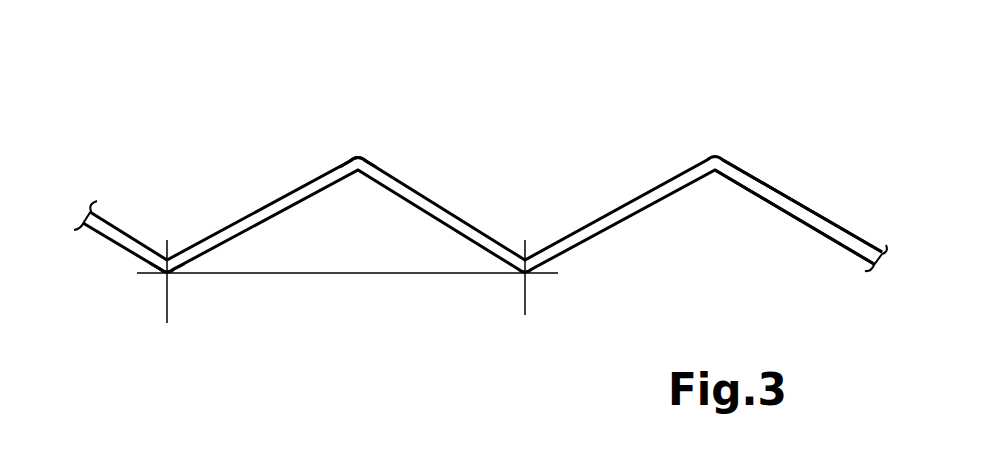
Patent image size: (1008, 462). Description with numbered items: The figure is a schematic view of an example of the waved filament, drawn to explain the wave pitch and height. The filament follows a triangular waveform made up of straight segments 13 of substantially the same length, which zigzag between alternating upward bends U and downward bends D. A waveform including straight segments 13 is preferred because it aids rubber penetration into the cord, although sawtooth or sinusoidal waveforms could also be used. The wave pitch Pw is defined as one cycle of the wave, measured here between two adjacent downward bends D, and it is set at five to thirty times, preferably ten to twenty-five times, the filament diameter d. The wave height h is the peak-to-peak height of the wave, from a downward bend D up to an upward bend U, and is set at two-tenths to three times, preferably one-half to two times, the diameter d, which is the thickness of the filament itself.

The straight segment 13 is at (258, 208).
The upward bent portion (crest) U is at (369, 148).
The downward bent portion (trough) D is at (160, 286).
The wave height h is at (358, 170).
The wave pitch Pw is at (525, 304).
The diameter d is at (650, 242).